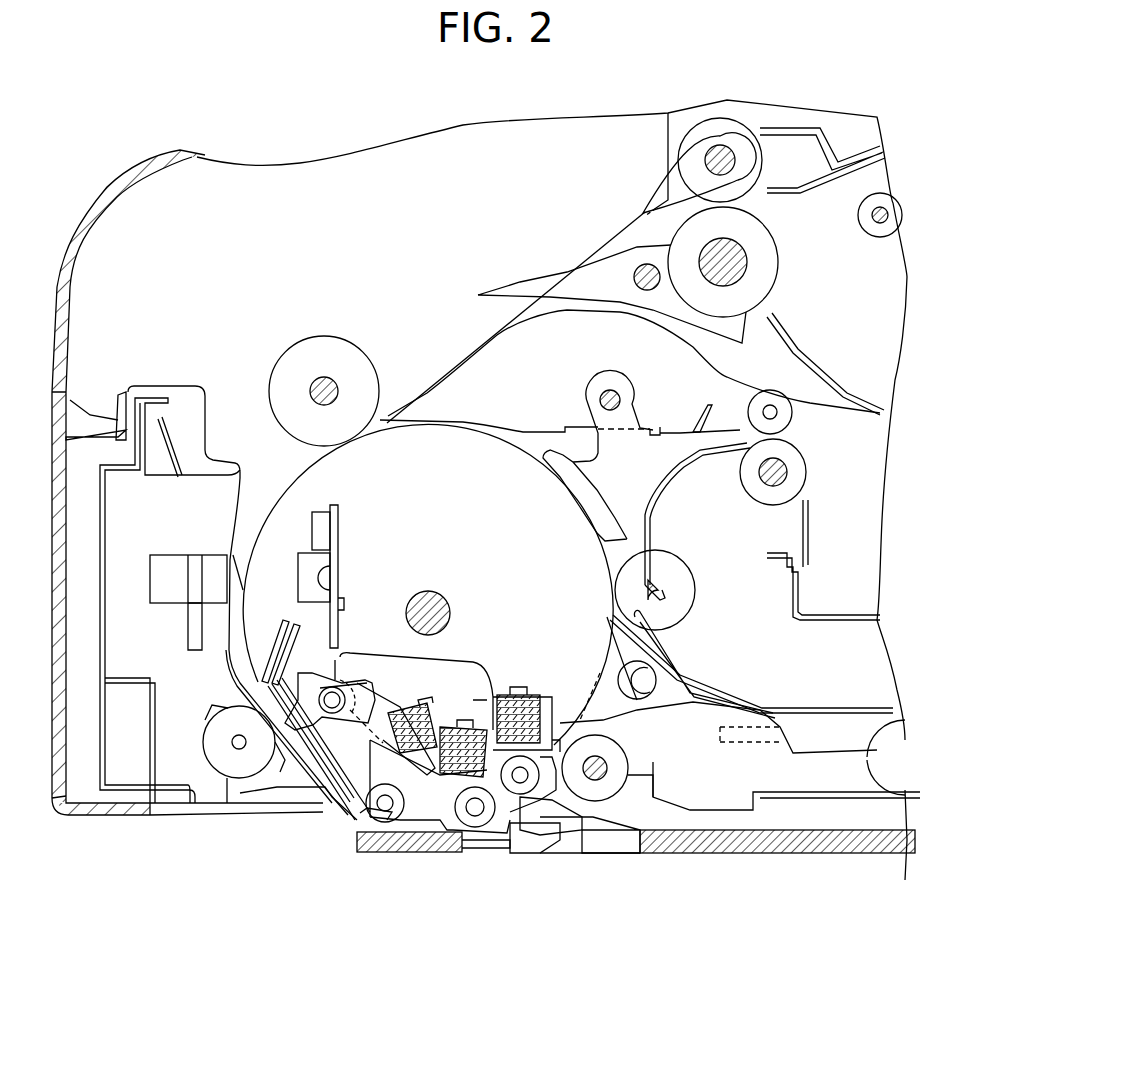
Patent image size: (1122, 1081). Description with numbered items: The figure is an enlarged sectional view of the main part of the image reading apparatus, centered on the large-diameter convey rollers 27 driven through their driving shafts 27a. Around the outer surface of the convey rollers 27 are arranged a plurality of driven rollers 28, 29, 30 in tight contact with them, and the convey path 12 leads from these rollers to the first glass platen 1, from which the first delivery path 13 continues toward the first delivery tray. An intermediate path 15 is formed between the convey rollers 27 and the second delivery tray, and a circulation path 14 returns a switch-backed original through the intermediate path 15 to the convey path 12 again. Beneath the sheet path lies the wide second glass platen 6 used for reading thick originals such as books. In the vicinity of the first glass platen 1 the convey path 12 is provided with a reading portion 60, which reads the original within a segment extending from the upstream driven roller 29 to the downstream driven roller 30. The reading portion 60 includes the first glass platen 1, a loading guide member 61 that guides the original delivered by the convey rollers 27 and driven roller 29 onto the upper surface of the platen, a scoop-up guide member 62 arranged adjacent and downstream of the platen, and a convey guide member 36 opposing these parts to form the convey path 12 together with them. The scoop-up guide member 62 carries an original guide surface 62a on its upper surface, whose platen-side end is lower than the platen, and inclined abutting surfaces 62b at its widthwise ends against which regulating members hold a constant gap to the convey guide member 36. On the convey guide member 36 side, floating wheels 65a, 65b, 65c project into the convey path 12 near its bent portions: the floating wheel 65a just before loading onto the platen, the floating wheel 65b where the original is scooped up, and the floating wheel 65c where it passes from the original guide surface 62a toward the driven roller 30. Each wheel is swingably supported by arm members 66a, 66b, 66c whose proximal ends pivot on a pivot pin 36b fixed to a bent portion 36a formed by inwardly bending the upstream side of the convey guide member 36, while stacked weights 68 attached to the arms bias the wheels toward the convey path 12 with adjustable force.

The first glass platen 1 is at (443, 847).
The second glass platen 6 is at (857, 847).
The convey path 12 is at (285, 483).
The first delivery path 13 is at (733, 430).
The circulation path 14 is at (507, 437).
The intermediate path 15 is at (843, 693).
The convey rollers 27 is at (432, 453).
The driving shafts 27a is at (432, 605).
The driven roller 28 is at (313, 356).
The driven roller 29 is at (217, 763).
The driven roller 30 is at (620, 773).
The convey guide member 36 is at (417, 827).
The bent portion 36a is at (317, 660).
The pivot pin 36b is at (353, 653).
The reading portion 60 is at (512, 646).
The loading guide member 61 is at (330, 825).
The scoop-up guide member 62 is at (487, 843).
The original guide surface 62a is at (540, 857).
The abutting surfaces 62b is at (540, 887).
The floating wheel 65a is at (383, 833).
The floating wheel 65b is at (493, 833).
The floating wheel 65c is at (583, 850).
The arm member 66a is at (340, 823).
The arm member 66b is at (397, 657).
The arm member 66c is at (473, 653).
The weights 68 is at (457, 657).